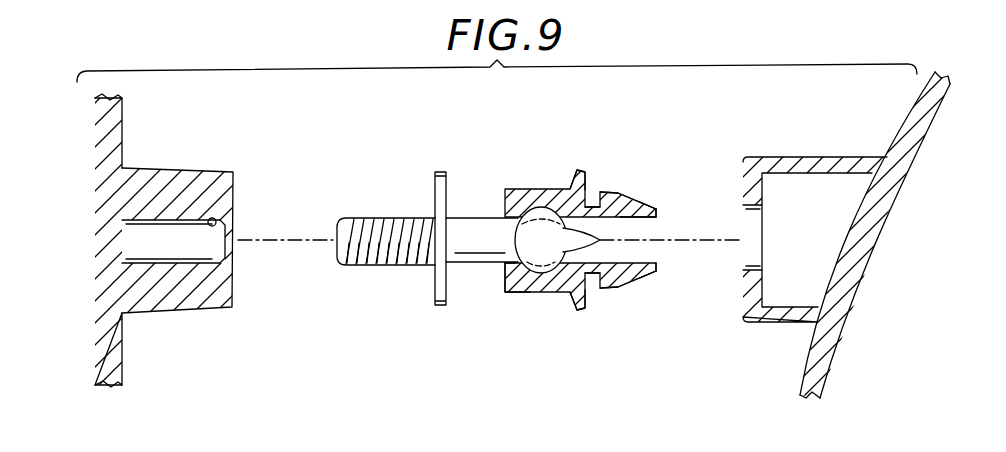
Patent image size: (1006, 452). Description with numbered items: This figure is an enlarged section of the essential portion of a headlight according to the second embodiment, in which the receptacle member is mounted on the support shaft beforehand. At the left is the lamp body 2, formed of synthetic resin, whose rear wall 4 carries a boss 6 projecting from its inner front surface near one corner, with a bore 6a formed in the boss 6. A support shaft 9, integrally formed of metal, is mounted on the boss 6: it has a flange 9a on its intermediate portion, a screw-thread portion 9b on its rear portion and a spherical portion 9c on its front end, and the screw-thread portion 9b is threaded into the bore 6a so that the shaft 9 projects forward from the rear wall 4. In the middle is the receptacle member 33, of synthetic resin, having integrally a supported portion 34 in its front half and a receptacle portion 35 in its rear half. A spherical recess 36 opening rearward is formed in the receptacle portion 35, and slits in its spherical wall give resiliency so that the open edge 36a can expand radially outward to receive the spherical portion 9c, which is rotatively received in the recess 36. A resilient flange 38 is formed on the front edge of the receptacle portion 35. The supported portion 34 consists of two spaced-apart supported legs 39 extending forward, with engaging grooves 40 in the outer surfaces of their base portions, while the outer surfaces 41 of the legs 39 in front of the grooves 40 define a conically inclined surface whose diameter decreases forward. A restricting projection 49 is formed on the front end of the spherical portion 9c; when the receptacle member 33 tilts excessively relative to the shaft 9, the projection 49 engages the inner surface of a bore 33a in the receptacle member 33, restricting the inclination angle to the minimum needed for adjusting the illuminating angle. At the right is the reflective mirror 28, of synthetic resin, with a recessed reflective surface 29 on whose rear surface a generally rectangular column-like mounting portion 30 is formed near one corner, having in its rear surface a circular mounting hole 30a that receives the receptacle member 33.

The lamp body 2 is at (95, 158).
The rear wall 4 is at (122, 138).
The boss 6 is at (210, 210).
The bore 6a is at (216, 220).
The support shaft 9 is at (427, 211).
The flange 9a is at (442, 172).
The screw-thread portion 9b is at (372, 217).
The spherical portion 9c is at (533, 222).
The reflective mirror 28 is at (902, 122).
The reflective surface 29 is at (912, 158).
The mounting portion 30 is at (815, 269).
The mounting hole 30a is at (763, 209).
The receptacle member 33 is at (512, 190).
The bore 33a is at (633, 218).
The supported portion 34 is at (642, 212).
The receptacle portion 35 is at (517, 293).
The spherical recess 36 is at (533, 264).
The open edge 36a is at (502, 273).
The resilient flange 38 is at (575, 172).
The supported legs 39 is at (658, 210).
The engaging grooves 40 is at (588, 200).
The outer surfaces 41 is at (623, 192).
The restricting projection 49 is at (600, 239).